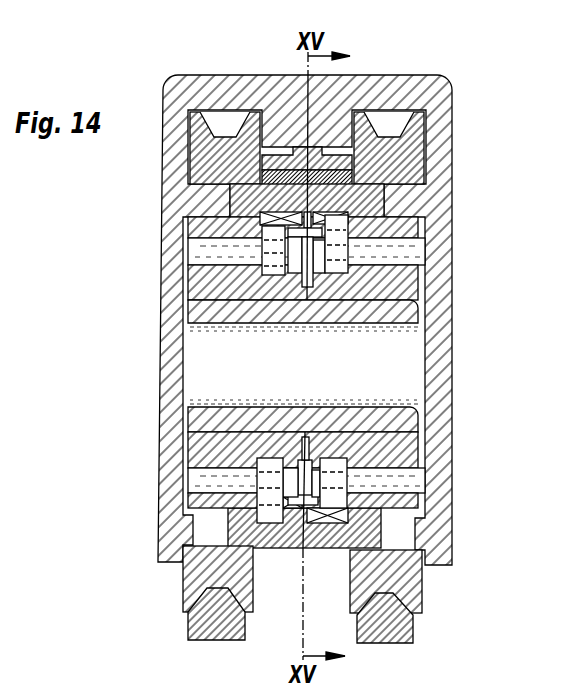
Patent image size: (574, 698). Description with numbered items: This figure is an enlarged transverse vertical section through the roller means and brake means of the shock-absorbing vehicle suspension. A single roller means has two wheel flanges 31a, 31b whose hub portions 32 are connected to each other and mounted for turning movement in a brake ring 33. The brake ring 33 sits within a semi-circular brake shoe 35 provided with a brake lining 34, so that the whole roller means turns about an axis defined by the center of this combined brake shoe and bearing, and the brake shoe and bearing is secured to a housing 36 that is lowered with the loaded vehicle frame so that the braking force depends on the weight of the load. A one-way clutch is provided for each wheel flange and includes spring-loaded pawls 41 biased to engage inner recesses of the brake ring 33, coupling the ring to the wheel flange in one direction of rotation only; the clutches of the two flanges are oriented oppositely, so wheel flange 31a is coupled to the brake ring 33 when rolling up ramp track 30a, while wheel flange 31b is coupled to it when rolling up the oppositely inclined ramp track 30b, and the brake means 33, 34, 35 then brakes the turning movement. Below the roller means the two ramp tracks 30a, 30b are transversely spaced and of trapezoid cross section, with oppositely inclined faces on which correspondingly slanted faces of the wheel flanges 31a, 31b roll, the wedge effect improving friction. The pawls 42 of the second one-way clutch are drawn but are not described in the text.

The housing 36 is at (422, 98).
The brake shoe 35 is at (333, 163).
The brake lining 34 is at (237, 178).
The brake ring 33 is at (250, 203).
The hub portions 32 is at (340, 440).
The spring-loaded pawls 41 is at (273, 235).
The lower rollers 42 is at (290, 512).
The wheel flange 31a is at (222, 567).
The wheel flange 31b is at (387, 570).
The ramp track 30a is at (212, 623).
The ramp track 30b is at (390, 625).